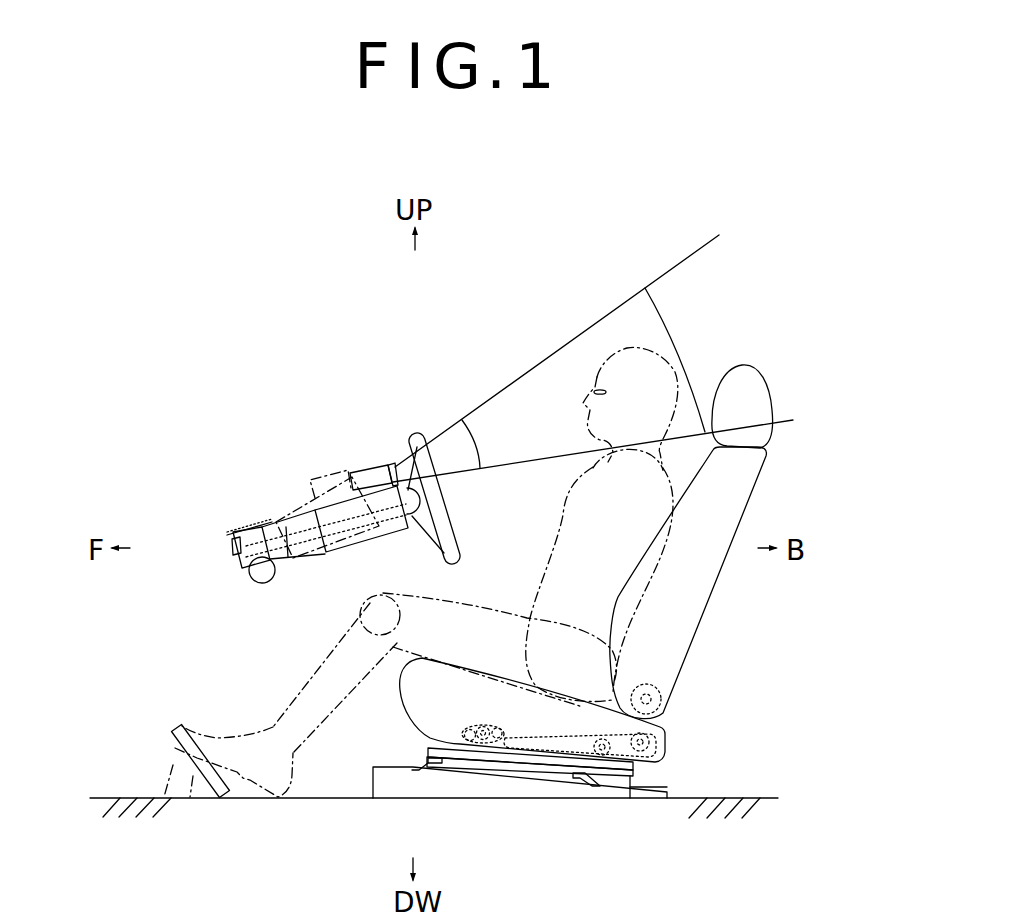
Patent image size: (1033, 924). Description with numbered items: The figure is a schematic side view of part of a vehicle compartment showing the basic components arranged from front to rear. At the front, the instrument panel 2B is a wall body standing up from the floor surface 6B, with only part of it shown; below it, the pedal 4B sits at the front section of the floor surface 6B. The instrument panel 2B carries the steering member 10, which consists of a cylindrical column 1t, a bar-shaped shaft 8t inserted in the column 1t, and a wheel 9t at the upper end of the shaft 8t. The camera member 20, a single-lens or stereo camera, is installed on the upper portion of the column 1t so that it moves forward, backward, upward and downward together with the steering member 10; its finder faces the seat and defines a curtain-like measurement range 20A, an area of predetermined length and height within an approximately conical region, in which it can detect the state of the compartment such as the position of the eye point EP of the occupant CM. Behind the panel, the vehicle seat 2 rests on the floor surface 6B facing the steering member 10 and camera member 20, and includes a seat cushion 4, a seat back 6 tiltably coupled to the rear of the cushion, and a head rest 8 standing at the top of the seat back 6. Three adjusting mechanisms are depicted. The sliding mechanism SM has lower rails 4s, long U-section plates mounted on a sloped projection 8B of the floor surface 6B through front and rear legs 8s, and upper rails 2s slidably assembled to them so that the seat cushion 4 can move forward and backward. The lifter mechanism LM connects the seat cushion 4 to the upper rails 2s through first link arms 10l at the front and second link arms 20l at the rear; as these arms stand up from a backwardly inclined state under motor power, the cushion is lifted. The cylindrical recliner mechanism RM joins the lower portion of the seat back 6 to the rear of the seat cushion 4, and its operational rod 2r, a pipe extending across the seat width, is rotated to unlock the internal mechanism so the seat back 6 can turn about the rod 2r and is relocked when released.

The vehicle seat 2 is at (592, 527).
The seat cushion 4 is at (665, 731).
The seat back 6 is at (693, 582).
The head rest 8 is at (758, 395).
The operational rod 2r is at (662, 699).
The recliner mechanism RM is at (660, 682).
The upper rail 2s is at (636, 763).
The lower rail 4s is at (633, 776).
The legs 8s is at (432, 772).
The sliding mechanism SM is at (624, 788).
The first link arm 10l is at (497, 757).
The second link arm 20l is at (613, 758).
The lifter mechanism LM is at (608, 877).
The projection 8B is at (373, 777).
The pedal 4B is at (173, 737).
The floor surface 6B is at (130, 797).
The occupant CM is at (314, 651).
The steering member 10 is at (400, 542).
The camera member 20 is at (362, 451).
The column 1t is at (367, 537).
The shaft 8t is at (303, 548).
The instrument panel 2B is at (232, 534).
The wheel 9t is at (440, 510).
The measurement range 20A is at (497, 413).
The eye point EP is at (588, 393).